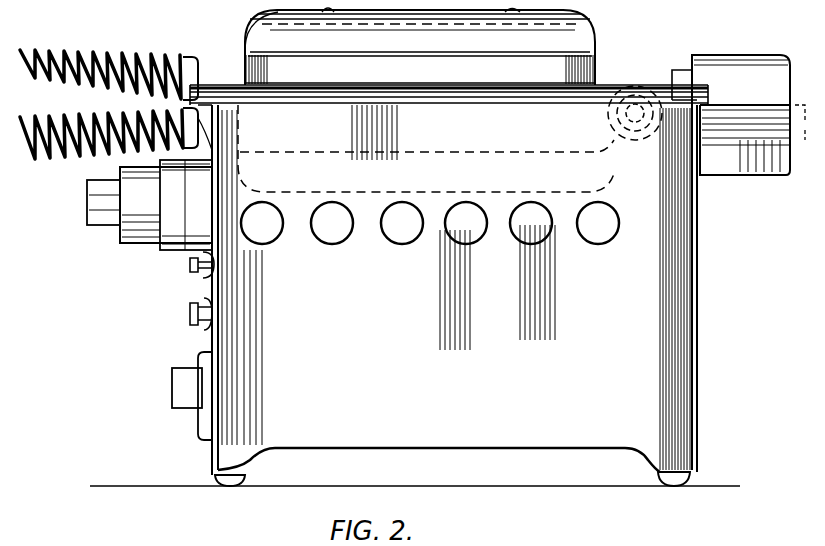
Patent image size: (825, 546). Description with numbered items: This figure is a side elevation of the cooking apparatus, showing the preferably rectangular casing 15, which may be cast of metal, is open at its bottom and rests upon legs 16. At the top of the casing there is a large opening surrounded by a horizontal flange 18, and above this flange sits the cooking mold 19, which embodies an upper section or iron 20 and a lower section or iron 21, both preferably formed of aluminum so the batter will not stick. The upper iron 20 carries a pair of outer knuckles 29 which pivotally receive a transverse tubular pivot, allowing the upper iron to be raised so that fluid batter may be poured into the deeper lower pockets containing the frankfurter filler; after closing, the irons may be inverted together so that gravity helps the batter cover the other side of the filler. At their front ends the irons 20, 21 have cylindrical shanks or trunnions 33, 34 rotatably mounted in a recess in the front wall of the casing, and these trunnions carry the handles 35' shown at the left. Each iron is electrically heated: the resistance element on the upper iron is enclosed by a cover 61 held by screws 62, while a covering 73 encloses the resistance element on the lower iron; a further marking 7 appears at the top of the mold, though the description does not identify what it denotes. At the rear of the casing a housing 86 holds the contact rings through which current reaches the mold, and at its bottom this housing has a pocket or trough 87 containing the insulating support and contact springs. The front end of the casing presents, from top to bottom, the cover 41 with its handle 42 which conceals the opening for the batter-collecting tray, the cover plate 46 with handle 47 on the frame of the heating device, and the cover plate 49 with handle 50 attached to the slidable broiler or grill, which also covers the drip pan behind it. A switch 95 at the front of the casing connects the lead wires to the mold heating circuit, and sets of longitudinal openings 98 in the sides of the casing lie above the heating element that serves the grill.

The cover top stud 7 is at (517, 6).
The casing 15 is at (454, 290).
The legs 16 is at (250, 478).
The horizontal flange 18 is at (548, 86).
The cooking mold 19 is at (598, 29).
The upper section or iron 20 is at (246, 36).
The lower section or iron 21 is at (300, 195).
The outer knuckles 29 is at (608, 70).
The cylindrical shank or trunnion 33 is at (196, 85).
The cylindrical shank or trunnion 34 is at (190, 120).
The handles 35' is at (101, 104).
The end or cover 41 is at (190, 264).
The handle 42 is at (200, 277).
The cover plate 46 is at (205, 330).
The handle 47 is at (190, 314).
The cover plate 49 is at (198, 440).
The handle 50 is at (178, 404).
The cover 61 is at (422, 34).
The screws 62 is at (328, 12).
The covering 73 is at (596, 178).
The housing 86 is at (731, 80).
The pocket or trough 87 is at (770, 163).
The switch 95 is at (149, 205).
The longitudinal openings 98 is at (482, 243).